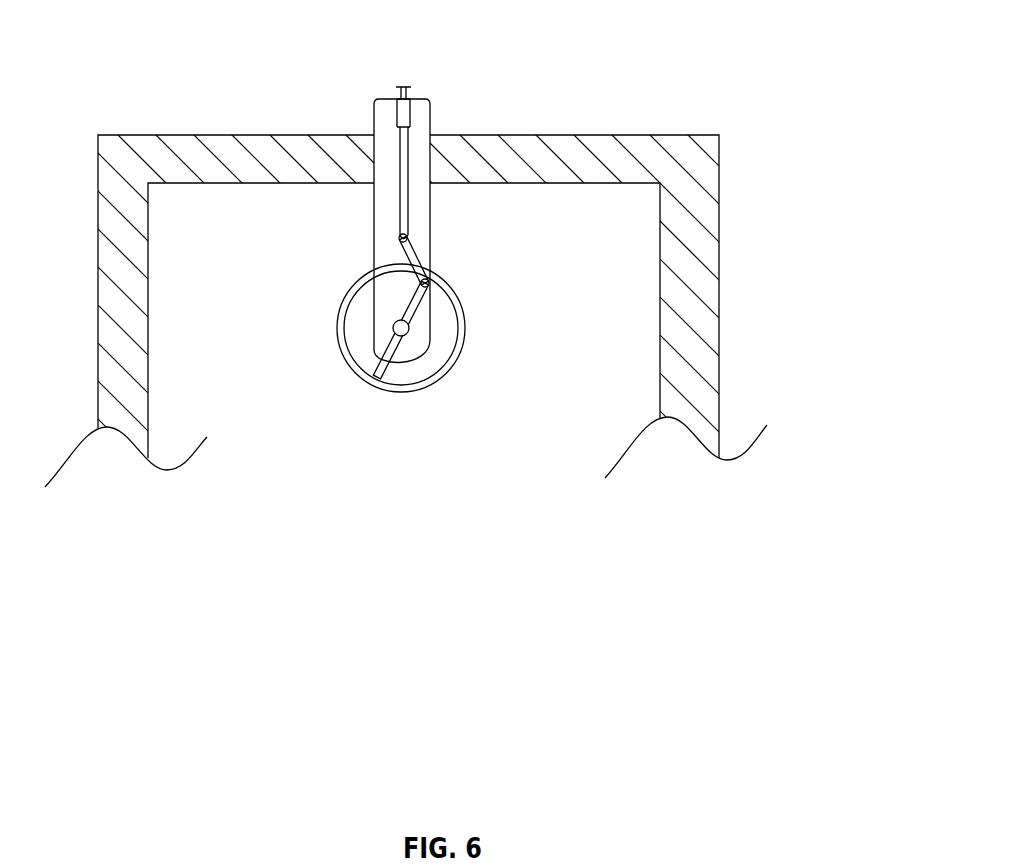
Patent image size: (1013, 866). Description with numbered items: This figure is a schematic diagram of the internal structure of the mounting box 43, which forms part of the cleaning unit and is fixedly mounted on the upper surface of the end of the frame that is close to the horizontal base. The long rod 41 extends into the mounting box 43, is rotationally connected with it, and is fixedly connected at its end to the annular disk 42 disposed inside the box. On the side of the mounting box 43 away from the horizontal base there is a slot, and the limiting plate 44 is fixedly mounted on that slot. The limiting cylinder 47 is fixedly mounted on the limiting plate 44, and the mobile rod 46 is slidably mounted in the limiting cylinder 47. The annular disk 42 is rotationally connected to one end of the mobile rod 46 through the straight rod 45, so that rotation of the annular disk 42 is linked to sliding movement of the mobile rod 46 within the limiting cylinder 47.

The long rod 41 is at (408, 333).
The annular disk 42 is at (406, 390).
The mounting box 43 is at (693, 358).
The limiting plate 44 is at (420, 133).
The straight rod 45 is at (418, 257).
The mobile rod 46 is at (402, 178).
The limiting cylinder 47 is at (405, 113).